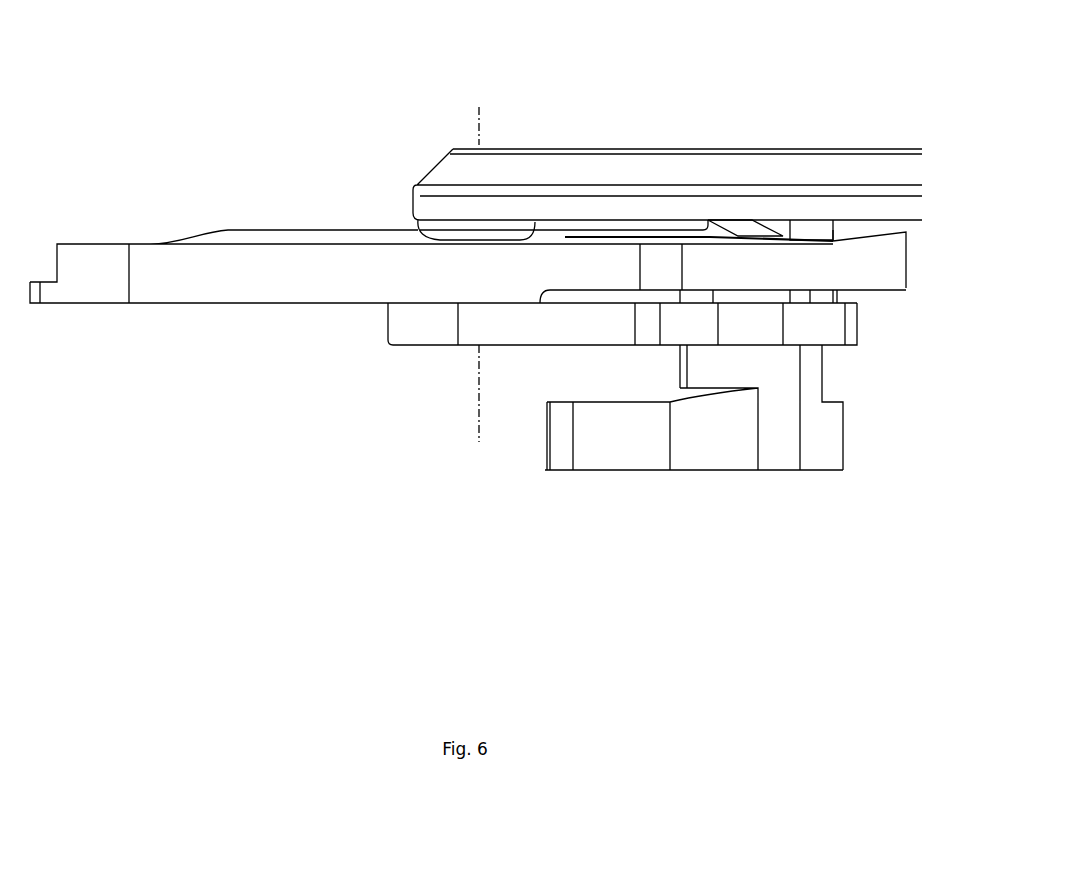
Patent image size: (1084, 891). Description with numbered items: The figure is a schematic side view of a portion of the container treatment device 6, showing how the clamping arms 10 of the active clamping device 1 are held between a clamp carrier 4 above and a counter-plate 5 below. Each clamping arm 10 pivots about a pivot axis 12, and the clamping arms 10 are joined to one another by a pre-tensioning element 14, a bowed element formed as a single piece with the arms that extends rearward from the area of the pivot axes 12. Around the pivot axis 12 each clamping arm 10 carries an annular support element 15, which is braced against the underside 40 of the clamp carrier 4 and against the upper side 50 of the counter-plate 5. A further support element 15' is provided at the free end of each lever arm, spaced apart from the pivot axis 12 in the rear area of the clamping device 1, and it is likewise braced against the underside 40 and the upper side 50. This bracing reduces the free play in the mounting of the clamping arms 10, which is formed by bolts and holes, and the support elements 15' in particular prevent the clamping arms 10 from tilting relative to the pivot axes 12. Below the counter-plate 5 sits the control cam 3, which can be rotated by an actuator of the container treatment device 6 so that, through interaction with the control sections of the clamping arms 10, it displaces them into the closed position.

The clamping device 1 is at (185, 182).
The control cam 3 is at (773, 442).
The clamp carrier 4 is at (663, 167).
The counter-plate 5 is at (415, 317).
The container treatment device 6 is at (200, 73).
The clamping arm 10 is at (286, 240).
The pivot axis 12 is at (477, 418).
The pre-tensioning element 14 is at (724, 255).
The support element 15 is at (525, 184).
The further support element 15' is at (845, 152).
The underside 40 is at (868, 220).
The upper side 50 is at (838, 300).